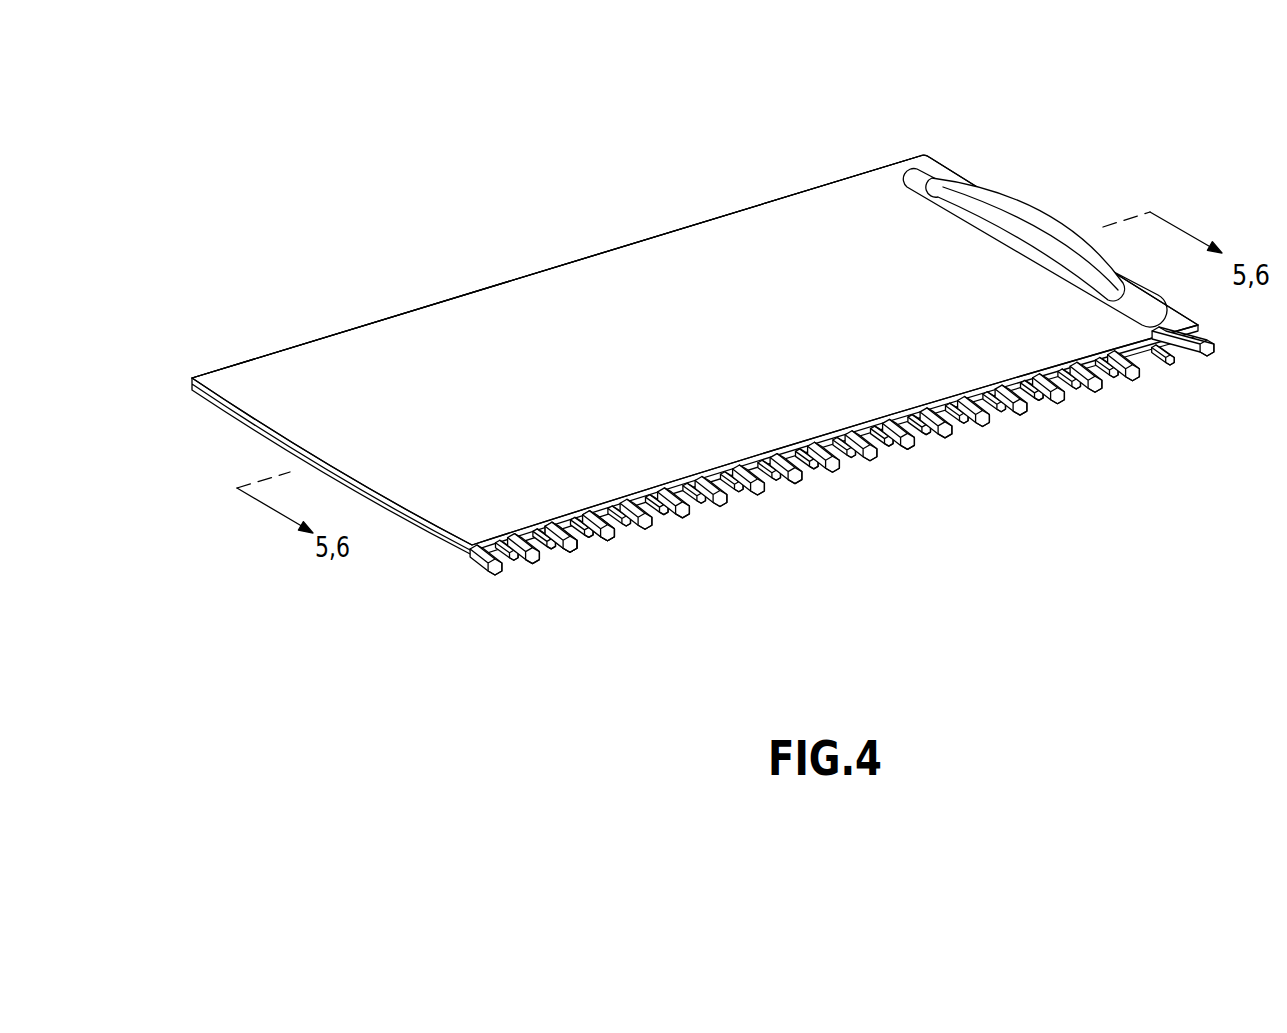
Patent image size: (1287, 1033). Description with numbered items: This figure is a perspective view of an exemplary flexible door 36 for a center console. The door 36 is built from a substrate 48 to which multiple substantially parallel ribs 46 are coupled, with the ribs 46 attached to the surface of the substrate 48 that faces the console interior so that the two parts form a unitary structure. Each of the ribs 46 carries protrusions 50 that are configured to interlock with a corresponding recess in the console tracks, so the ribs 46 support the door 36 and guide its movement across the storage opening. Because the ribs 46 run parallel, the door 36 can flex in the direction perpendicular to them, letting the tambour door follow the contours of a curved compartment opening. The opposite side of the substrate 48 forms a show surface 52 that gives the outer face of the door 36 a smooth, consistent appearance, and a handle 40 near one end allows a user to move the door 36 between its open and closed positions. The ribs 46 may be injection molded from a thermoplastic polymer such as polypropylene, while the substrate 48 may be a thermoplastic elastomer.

The flexible door 36 is at (345, 213).
The handle 40 is at (1012, 190).
The ribs 46 is at (877, 506).
The substrate 48 is at (578, 260).
The protrusions 50 is at (575, 548).
The show surface 52 is at (743, 238).